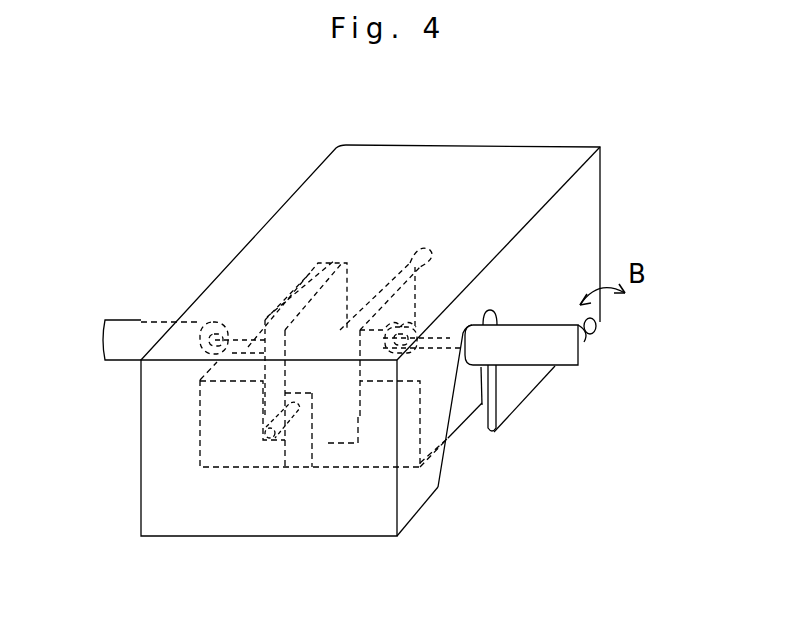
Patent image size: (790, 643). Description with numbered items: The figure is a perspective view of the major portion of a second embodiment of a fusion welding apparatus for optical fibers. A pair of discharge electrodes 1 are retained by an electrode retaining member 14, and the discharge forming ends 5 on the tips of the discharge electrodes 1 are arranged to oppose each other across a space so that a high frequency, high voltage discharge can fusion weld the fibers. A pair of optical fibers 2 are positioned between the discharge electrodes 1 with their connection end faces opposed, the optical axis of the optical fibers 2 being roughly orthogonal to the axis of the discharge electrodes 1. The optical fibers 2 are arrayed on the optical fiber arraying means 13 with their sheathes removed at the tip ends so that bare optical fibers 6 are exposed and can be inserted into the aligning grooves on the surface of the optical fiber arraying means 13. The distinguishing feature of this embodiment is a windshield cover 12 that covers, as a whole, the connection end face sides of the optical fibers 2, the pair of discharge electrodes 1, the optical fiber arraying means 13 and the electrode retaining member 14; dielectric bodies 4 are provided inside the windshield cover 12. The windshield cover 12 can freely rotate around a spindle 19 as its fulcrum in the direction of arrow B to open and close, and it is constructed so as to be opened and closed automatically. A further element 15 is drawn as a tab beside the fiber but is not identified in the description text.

The terminal 1 is at (415, 262).
The electric wire 2 is at (125, 318).
The terminal 4 is at (300, 282).
The terminal accommodating chamber 5 is at (348, 300).
The eyelet 6 is at (218, 322).
The connector housing 12 is at (560, 174).
The tab 13 is at (462, 412).
The pin 14 is at (293, 468).
The tab 15 is at (488, 418).
The wire end 19 is at (598, 322).